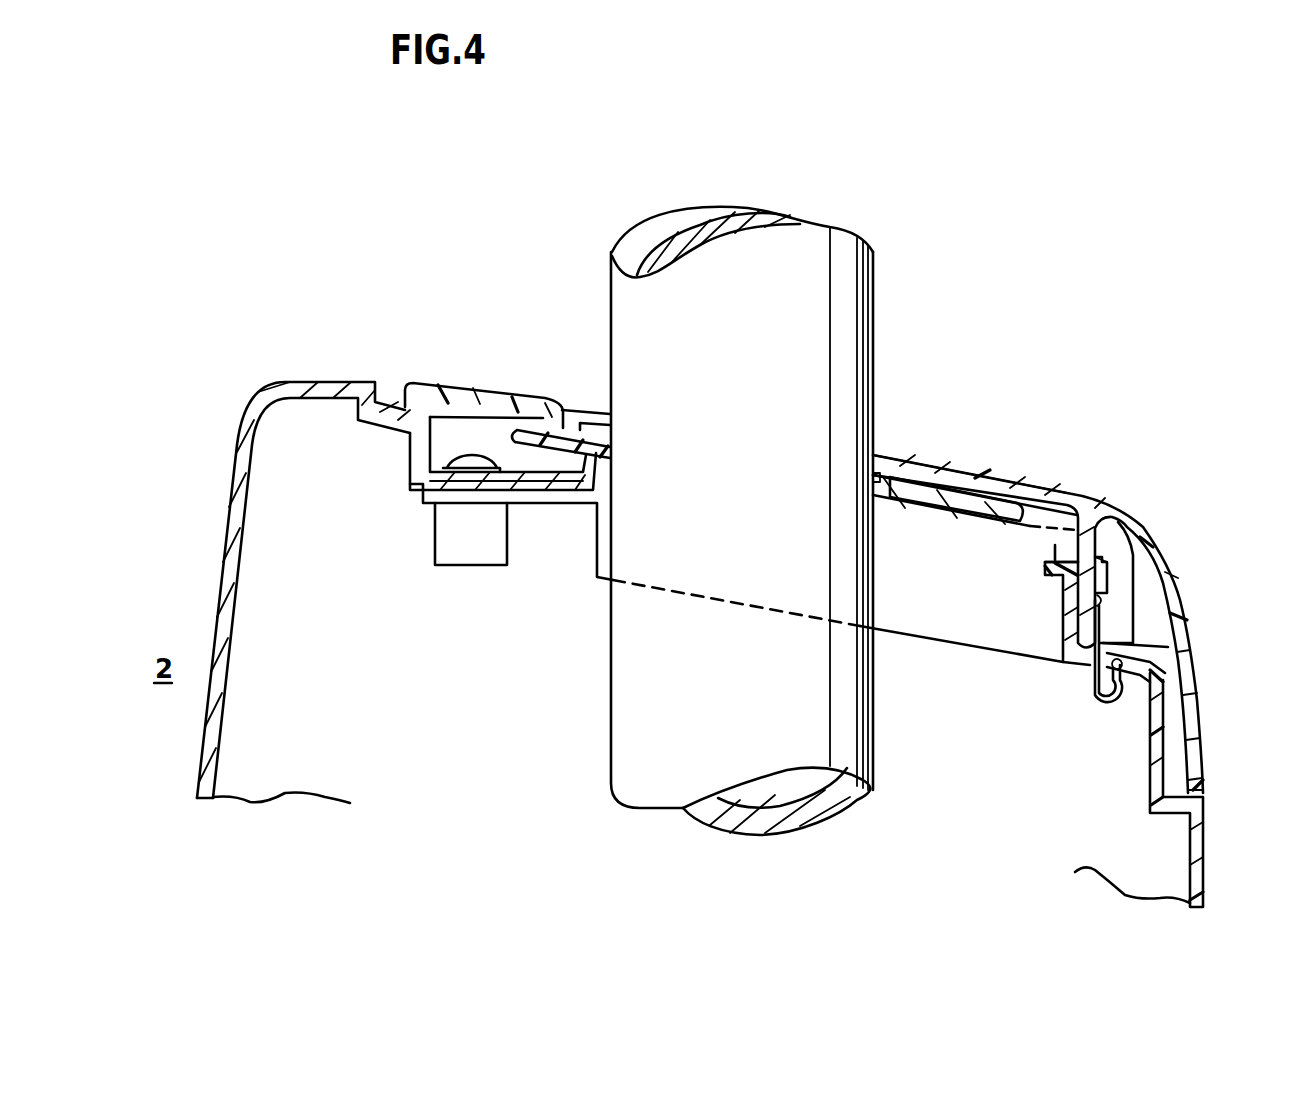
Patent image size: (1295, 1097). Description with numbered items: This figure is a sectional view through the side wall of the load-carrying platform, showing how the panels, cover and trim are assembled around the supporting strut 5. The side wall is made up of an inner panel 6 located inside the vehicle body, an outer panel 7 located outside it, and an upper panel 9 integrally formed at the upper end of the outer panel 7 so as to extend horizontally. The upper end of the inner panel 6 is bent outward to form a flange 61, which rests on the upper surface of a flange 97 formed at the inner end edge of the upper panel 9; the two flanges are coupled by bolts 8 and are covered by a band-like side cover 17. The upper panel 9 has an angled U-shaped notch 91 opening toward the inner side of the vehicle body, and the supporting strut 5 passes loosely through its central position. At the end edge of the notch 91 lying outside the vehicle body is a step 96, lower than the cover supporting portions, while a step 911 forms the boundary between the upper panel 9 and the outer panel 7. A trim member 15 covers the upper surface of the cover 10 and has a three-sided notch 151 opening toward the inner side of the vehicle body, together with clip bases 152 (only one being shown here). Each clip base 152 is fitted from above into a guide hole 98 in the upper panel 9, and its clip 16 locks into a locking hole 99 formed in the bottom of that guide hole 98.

The supporting strut 5 is at (858, 297).
The inner panel 6 is at (212, 628).
The flange 61 is at (520, 477).
The outer panel 7 is at (1207, 828).
The bolts 8 is at (470, 455).
The upper panel 9 is at (1070, 665).
The angled U-shaped notch 91 is at (1047, 570).
The step 96 is at (1055, 545).
The flange 97 is at (528, 503).
The guide hole 98 is at (1095, 603).
The locking hole 99 is at (1135, 653).
The step 911 is at (1197, 783).
The cover 10 is at (910, 513).
The trim member 15 is at (1120, 502).
The three-sided notch 151 is at (960, 477).
The clip base 152 is at (1120, 605).
The clip 16 is at (1097, 698).
The side cover 17 is at (425, 388).